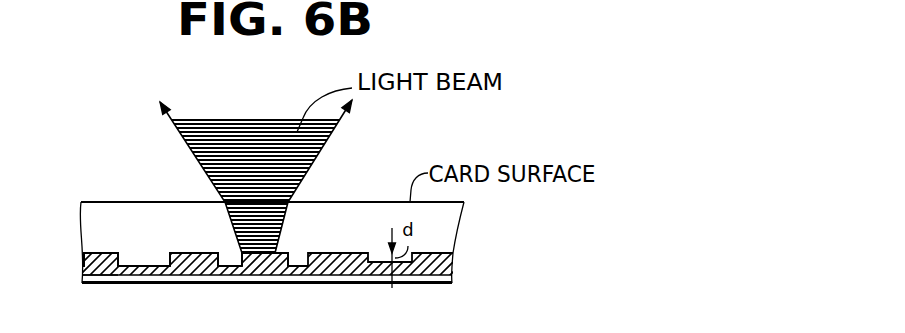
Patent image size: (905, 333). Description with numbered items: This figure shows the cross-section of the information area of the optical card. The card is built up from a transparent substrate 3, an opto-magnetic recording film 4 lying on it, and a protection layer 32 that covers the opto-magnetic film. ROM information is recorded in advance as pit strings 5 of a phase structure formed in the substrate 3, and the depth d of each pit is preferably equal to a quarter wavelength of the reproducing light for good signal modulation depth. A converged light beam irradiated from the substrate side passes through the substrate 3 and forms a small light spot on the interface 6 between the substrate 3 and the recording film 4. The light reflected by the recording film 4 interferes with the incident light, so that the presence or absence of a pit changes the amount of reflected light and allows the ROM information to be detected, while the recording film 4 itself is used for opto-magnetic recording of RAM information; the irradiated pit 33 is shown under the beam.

The transparent substrate 3 is at (437, 220).
The opto-magnetic recording film 4 is at (83, 267).
The pit strings 5 is at (182, 253).
The interface 6 is at (453, 262).
The protection layer 32 is at (453, 283).
The pit irradiated by light beam 33 is at (278, 252).